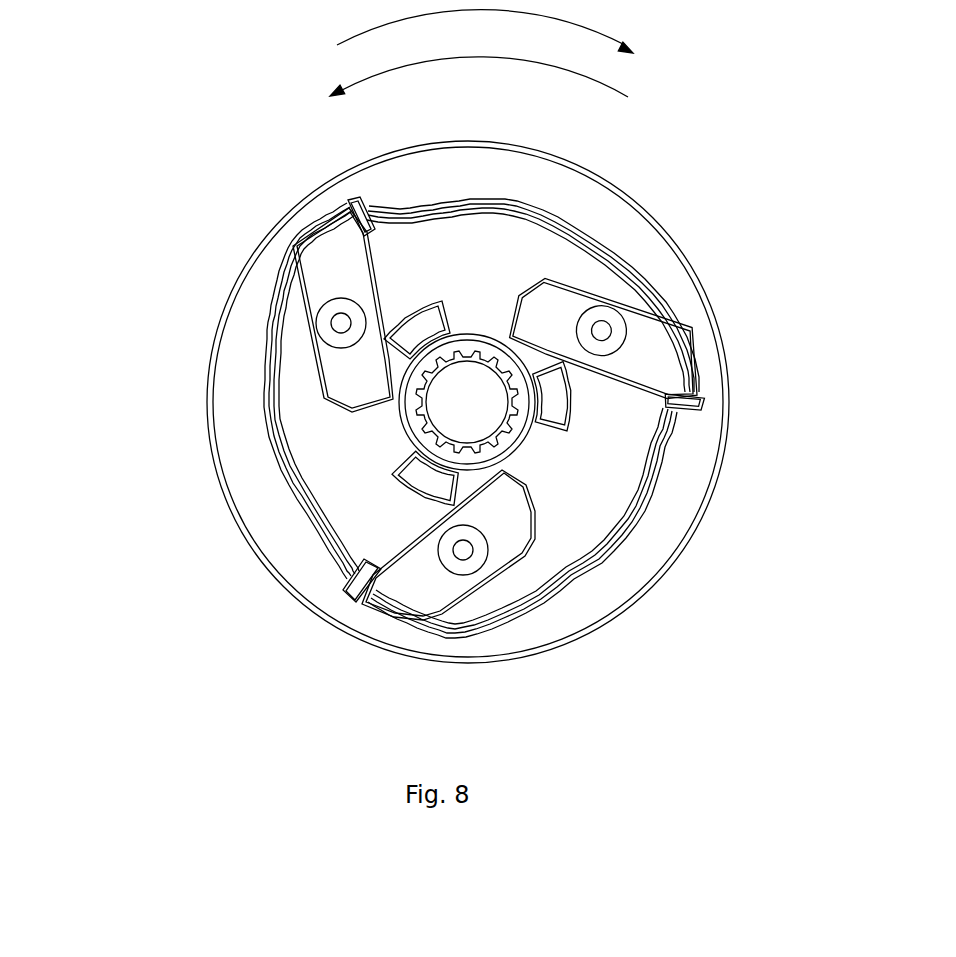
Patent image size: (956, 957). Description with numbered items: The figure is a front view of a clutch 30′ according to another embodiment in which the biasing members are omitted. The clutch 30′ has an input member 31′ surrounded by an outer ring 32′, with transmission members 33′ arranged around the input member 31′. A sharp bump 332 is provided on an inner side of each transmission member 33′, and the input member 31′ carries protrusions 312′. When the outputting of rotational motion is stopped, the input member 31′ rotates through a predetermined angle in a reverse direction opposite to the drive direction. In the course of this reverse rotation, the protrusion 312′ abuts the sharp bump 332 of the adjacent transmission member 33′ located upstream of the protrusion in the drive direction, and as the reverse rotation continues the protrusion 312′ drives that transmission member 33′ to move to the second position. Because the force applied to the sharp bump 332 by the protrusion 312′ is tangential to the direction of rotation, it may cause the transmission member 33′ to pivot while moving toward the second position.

The clutch 30′ is at (141, 128).
The input member 31′ is at (512, 450).
The outer ring / drum 32′ is at (662, 222).
The transmission member 33′ is at (645, 360).
The protrusion 312′ is at (570, 420).
The sharp bump 332 is at (542, 278).